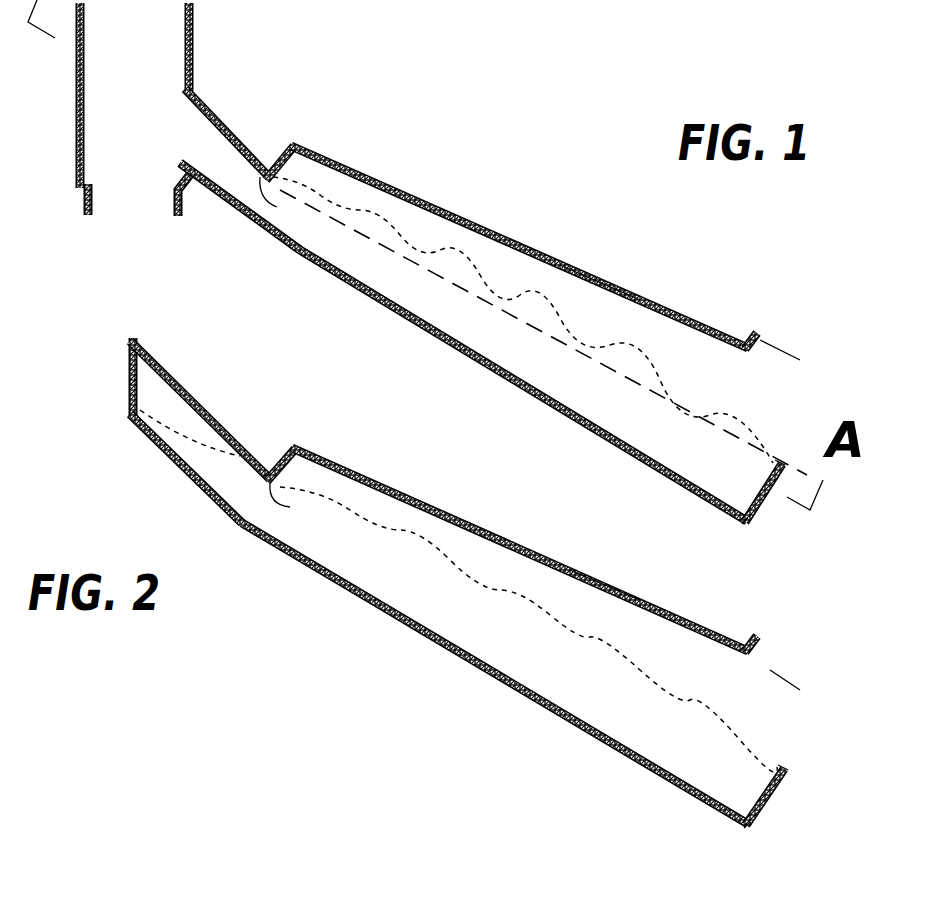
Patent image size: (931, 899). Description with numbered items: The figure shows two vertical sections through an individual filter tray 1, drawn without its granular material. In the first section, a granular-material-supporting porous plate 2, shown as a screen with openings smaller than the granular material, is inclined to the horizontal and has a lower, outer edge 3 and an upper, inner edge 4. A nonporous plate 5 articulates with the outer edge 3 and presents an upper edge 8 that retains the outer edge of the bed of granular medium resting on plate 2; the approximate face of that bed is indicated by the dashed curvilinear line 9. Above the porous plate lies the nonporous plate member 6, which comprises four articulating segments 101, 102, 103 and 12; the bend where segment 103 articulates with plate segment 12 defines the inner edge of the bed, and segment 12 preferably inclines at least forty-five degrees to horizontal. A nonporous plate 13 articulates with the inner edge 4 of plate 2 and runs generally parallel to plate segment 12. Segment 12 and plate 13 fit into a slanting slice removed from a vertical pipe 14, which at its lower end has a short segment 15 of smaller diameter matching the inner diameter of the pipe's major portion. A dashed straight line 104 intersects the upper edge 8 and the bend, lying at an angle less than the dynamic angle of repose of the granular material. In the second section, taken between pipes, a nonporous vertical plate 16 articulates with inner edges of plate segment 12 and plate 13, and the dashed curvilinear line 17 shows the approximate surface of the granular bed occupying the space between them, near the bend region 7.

In FIG. 1, the filter tray 1 is at (763, 370).
In FIG. 2, the filter tray 1 is at (775, 703).
In FIG. 1, the porous plate 2 is at (387, 313).
In FIG. 2, the porous plate 2 is at (420, 630).
In FIG. 1, the lower outer edge 3 is at (743, 520).
In FIG. 2, the lower outer edge 3 is at (745, 825).
In FIG. 1, the upper inner edge 4 is at (233, 223).
In FIG. 2, the upper inner edge 4 is at (243, 527).
In FIG. 1, the nonporous plate 5 is at (763, 510).
In FIG. 2, the nonporous plate 5 is at (775, 795).
In FIG. 1, the nonporous plate member 6 is at (407, 190).
In FIG. 2, the nonporous plate member 6 is at (437, 507).
In FIG. 1, the bend corner 7 is at (277, 209).
In FIG. 2, the bend corner 7 is at (288, 512).
In FIG. 1, the upper edge 8 is at (775, 460).
In FIG. 2, the upper edge 8 is at (780, 767).
In FIG. 1, the dashed curvilinear line 9 is at (577, 330).
In FIG. 2, the dashed curvilinear line 9 is at (617, 655).
In FIG. 1, the plate segment 12 is at (217, 117).
In FIG. 2, the plate segment 12 is at (187, 393).
In FIG. 1, the nonporous plate 13 is at (210, 180).
In FIG. 2, the nonporous plate 13 is at (163, 453).
In FIG. 1, the vertical pipe 14 is at (197, 43).
In FIG. 1, the short segment 15 is at (80, 200).
In FIG. 2, the nonporous vertical plate 16 is at (128, 382).
In FIG. 2, the dashed curvilinear line 17 is at (190, 452).
In FIG. 1, the segment 101 is at (750, 337).
In FIG. 2, the segment 101 is at (748, 640).
In FIG. 1, the segment 102 is at (573, 270).
In FIG. 2, the segment 102 is at (575, 572).
In FIG. 1, the segment 103 is at (278, 147).
In FIG. 2, the segment 103 is at (275, 460).
In FIG. 1, the center line 104 is at (473, 298).